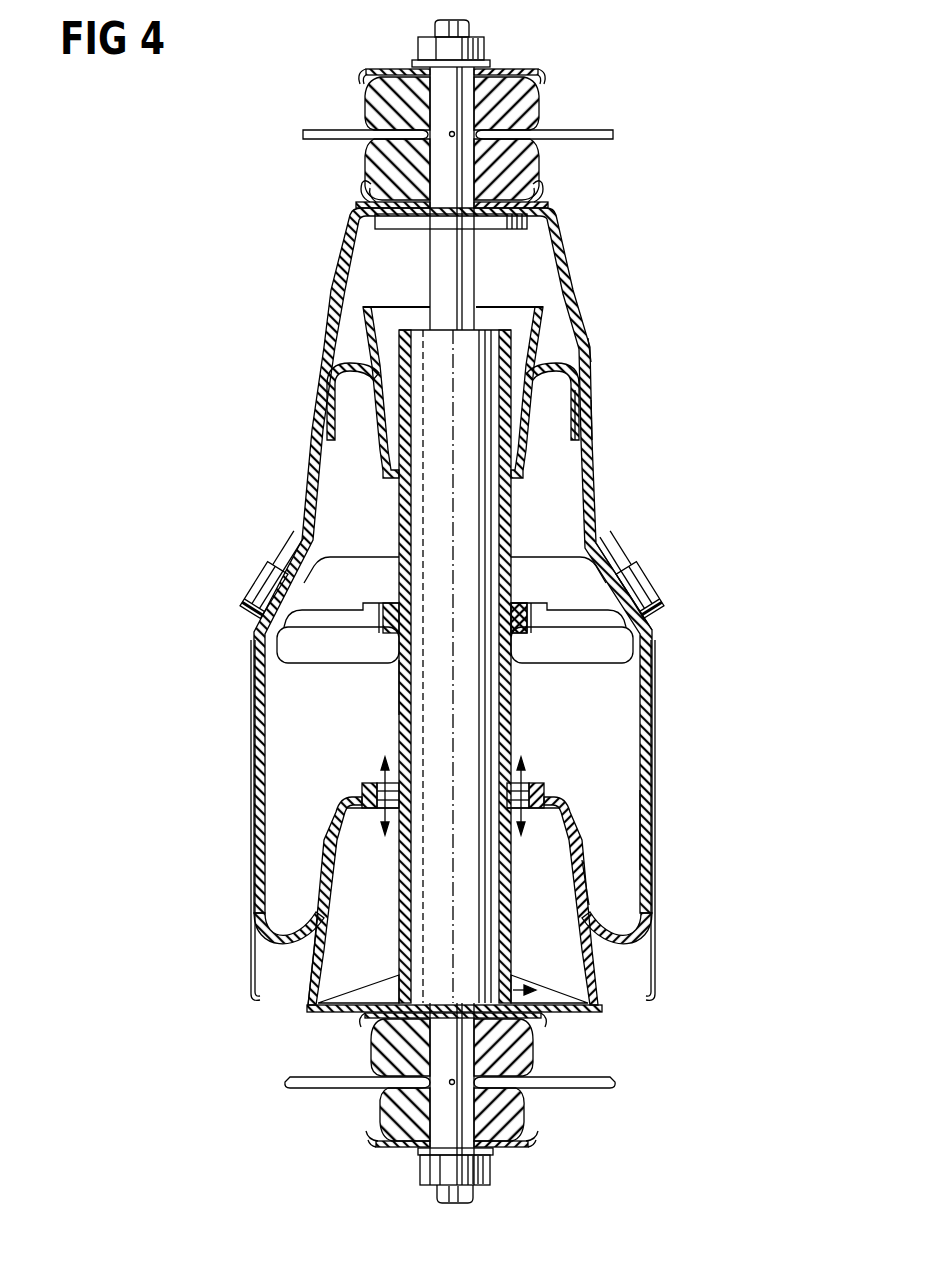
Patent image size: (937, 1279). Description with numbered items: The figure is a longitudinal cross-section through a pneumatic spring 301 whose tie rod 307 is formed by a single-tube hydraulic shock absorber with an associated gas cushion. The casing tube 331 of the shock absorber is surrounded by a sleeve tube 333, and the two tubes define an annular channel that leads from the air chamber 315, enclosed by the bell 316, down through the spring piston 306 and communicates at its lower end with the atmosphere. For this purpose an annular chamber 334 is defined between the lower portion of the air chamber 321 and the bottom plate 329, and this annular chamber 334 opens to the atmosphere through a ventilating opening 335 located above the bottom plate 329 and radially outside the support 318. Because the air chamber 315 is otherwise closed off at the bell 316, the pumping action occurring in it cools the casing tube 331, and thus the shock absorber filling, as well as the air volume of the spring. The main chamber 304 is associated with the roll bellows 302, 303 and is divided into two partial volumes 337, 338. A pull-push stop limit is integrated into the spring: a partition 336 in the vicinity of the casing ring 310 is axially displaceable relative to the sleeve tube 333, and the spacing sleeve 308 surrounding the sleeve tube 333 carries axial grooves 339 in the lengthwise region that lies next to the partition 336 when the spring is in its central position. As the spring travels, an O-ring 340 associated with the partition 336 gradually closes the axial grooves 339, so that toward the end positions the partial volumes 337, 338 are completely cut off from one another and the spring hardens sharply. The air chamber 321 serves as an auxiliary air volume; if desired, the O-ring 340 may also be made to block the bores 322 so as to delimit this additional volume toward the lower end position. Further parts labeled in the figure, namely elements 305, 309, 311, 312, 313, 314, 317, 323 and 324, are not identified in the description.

The pneumatic spring 301 is at (622, 545).
The roll bellows 302 is at (594, 430).
The roll bellows 303 is at (653, 920).
The main chamber 304 is at (330, 575).
The inner cup 305 is at (560, 328).
The spring piston 306 is at (332, 951).
The tie rod 307 is at (418, 739).
The spacing sleeve 308 is at (399, 685).
The right clamp bolt 309 is at (627, 563).
The casing ring 310 is at (652, 622).
The housing upper wall 311 is at (594, 354).
The housing lower wall 312 is at (653, 835).
The lower tapered cup 313 is at (326, 893).
The inner cup wall 314 is at (368, 332).
The air chamber 315 is at (516, 274).
The bell 316 is at (562, 256).
The upper rubber mount 317 is at (560, 92).
The support 318 is at (551, 1104).
The air chamber 321 is at (560, 927).
The bores 322 is at (528, 812).
The bracket 323 is at (580, 382).
The skirt 324 is at (637, 946).
The bottom plate 329 is at (365, 1012).
The casing tube 331 is at (418, 410).
The sleeve tube 333 is at (403, 352).
The annular chamber 334 is at (541, 1019).
The ventilating opening 335 is at (566, 1008).
The partition 336 is at (580, 618).
The partial volume 337 is at (567, 442).
The partial volume 338 is at (594, 888).
The axial grooves 339 is at (397, 640).
The O-ring 340 is at (527, 627).